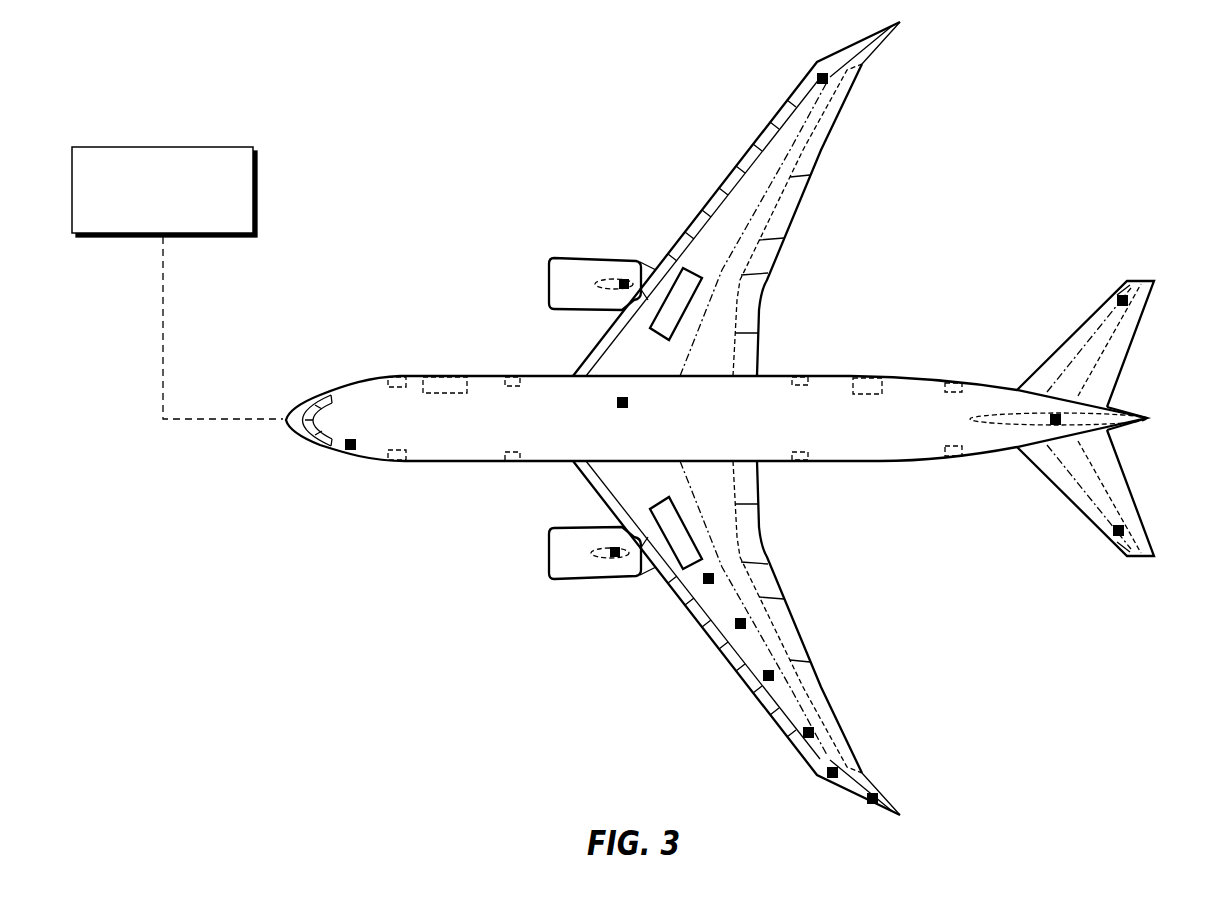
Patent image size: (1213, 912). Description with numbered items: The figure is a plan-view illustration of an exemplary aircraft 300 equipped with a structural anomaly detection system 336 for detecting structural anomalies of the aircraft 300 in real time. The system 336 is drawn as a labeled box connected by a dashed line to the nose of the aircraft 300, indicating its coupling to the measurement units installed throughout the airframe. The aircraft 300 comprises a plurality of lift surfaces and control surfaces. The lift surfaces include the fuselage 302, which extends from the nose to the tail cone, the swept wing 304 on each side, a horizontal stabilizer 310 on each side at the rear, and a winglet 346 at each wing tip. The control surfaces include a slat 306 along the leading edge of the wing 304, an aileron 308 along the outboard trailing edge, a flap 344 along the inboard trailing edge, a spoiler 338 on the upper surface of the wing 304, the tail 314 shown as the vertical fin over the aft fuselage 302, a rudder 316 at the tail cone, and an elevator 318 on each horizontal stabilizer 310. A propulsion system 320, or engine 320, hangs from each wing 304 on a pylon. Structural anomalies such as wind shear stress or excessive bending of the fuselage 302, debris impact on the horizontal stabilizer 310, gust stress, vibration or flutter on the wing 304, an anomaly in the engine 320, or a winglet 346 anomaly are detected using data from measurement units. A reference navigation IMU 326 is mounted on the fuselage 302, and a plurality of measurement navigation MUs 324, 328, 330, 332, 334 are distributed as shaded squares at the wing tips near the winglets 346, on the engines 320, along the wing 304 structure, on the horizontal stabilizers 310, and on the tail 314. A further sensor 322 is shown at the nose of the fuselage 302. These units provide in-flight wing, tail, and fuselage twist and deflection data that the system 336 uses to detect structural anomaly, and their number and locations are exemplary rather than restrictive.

The aircraft 300 is at (539, 101).
The fuselage 302 is at (480, 430).
The wing 304 is at (745, 190).
The slat 306 is at (771, 120).
The aileron 308 is at (840, 118).
The horizontal stabilizer 310 is at (1072, 328).
The tail 314 is at (993, 423).
The rudder 316 is at (1118, 406).
The elevator 318 is at (1112, 365).
The propulsion system 320 is at (565, 258).
The sensor on fuselage nose 322 is at (348, 450).
The measurement navigation MU 324 is at (818, 77).
The reference navigation IMU 326 is at (620, 397).
The measurement navigation MU 328 is at (622, 279).
The measurement navigation MU 330 is at (705, 585).
The measurement navigation MU 332 is at (1117, 297).
The measurement navigation MU 334 is at (1053, 413).
The structural anomaly detection system 336 is at (218, 146).
The spoiler 338 is at (673, 253).
The flap 344 is at (790, 207).
The winglet 346 is at (882, 40).